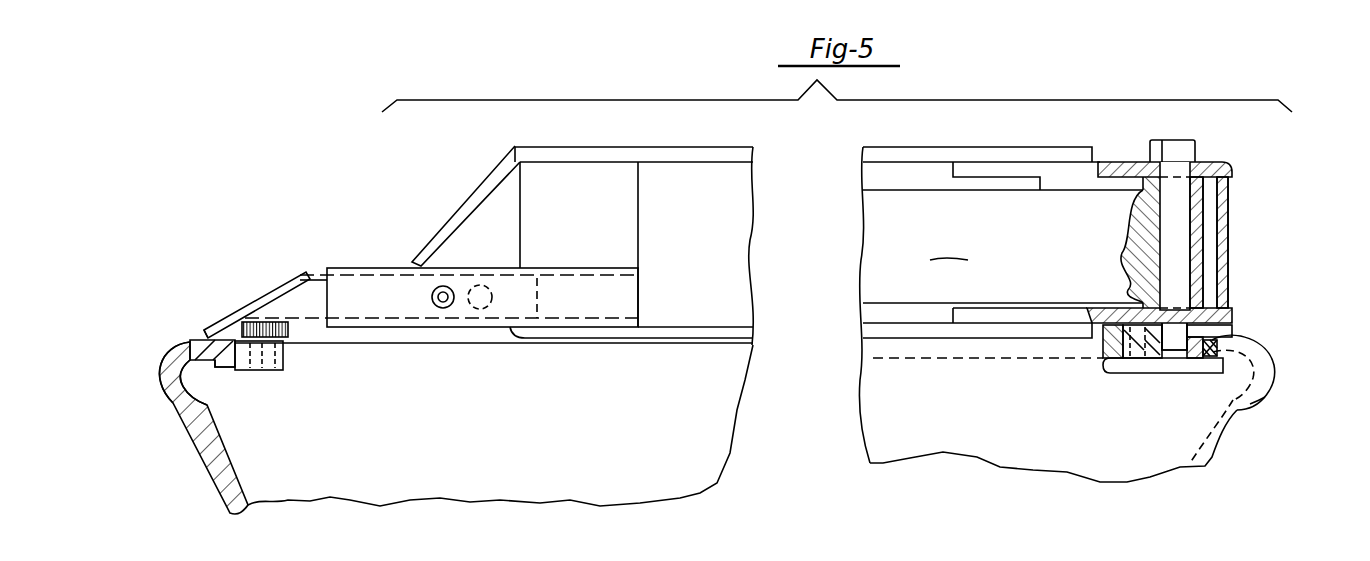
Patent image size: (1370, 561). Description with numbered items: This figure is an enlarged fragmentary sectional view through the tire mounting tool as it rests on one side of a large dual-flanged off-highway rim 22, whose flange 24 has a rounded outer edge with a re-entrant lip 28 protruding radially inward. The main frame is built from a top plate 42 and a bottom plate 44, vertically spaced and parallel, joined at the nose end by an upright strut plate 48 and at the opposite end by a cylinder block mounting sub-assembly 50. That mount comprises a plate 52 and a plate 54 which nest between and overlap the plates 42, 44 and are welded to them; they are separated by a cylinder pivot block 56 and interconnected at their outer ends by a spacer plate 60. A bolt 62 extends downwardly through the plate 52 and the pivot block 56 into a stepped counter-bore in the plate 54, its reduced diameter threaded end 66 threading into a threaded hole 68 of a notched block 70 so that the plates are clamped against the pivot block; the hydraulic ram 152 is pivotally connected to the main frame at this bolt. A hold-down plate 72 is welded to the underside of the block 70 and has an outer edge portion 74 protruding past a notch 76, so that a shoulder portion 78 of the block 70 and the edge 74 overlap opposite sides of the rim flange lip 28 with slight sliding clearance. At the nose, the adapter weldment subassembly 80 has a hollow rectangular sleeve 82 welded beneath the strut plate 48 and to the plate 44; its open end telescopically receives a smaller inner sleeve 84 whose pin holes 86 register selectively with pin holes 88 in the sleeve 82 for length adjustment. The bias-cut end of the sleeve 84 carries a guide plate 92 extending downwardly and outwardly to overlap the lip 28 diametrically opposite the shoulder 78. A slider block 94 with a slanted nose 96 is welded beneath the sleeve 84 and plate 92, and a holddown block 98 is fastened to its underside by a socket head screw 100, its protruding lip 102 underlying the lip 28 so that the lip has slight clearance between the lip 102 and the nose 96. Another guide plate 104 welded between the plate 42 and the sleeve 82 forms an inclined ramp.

The rim 22 is at (213, 460).
The flange 24 is at (183, 362).
The re-entrant lip 28 is at (200, 351).
The top plate 42 is at (630, 150).
The bottom plate 44 is at (663, 333).
The upright strut plate 48 is at (630, 223).
The cylinder block mounting sub-assembly 50 is at (1117, 162).
The plate 52 is at (1023, 172).
The plate 54 is at (1005, 314).
The cylinder pivot block 56 is at (1200, 214).
The spacer plate 60 is at (1229, 257).
The bolt 62 is at (1190, 142).
The reduced diameter threaded end 66 is at (1145, 359).
The threaded hole 68 is at (1172, 352).
The notched block 70 is at (1100, 347).
The hold-down plate 72 is at (1110, 366).
The outer edge portion 74 is at (1252, 410).
The notch 76 is at (1200, 357).
The shoulder portion 78 is at (1220, 339).
The adapter weldment subassembly 80 is at (342, 262).
The hollow rectangular sleeve 82 is at (367, 267).
The inner hollow rectangular sleeve 84 is at (305, 300).
The pin holes 86 is at (492, 297).
The pin holes 88 is at (447, 308).
The guide plate 92 is at (260, 297).
The slider block 94 is at (288, 334).
The slanted nose 96 is at (227, 320).
The holddown block 98 is at (285, 360).
The socket head screw 100 is at (263, 377).
The protruding lip 102 is at (234, 373).
The guide plate 104 is at (468, 192).
The hydraulic ram 152 is at (1003, 246).